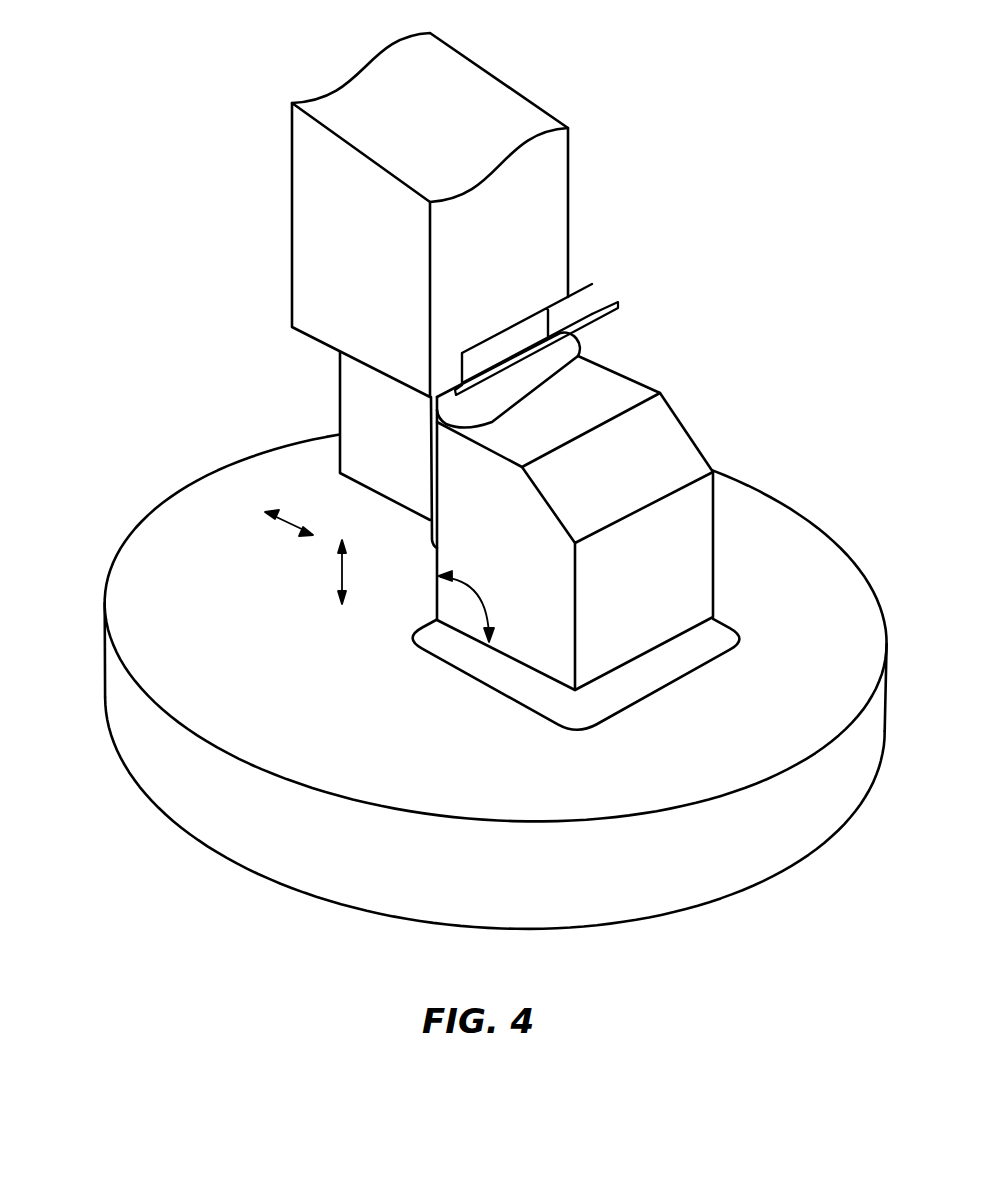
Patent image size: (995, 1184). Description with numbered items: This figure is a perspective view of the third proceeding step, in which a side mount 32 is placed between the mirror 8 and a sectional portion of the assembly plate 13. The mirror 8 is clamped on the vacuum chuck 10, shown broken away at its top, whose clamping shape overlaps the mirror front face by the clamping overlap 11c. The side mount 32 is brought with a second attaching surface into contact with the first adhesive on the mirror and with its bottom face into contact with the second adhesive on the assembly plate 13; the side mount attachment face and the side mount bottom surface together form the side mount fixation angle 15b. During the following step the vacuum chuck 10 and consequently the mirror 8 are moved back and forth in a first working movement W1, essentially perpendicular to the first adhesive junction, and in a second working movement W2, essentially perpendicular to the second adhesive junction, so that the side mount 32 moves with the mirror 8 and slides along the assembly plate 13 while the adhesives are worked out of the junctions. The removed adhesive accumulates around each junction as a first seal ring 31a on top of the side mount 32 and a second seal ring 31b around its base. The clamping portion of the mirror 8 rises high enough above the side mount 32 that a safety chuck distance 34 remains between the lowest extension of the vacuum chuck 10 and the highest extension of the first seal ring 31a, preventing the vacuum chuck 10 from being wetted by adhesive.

The mirror 8 is at (338, 380).
The vacuum chuck 10 is at (300, 213).
The clamping overlap 11c is at (592, 318).
The assembly plate 13 is at (822, 808).
The side mount fixation angle 15b is at (467, 603).
The first seal ring 31a is at (578, 352).
The second seal ring 31b is at (722, 630).
The side mount 32 is at (660, 393).
The safety chuck distance 34 is at (615, 272).
The first working movement W1 is at (290, 518).
The second working movement W2 is at (340, 573).